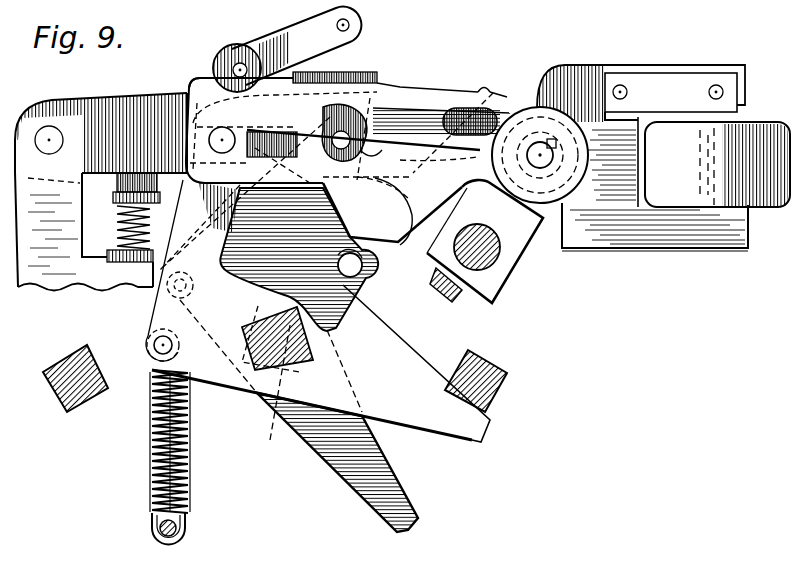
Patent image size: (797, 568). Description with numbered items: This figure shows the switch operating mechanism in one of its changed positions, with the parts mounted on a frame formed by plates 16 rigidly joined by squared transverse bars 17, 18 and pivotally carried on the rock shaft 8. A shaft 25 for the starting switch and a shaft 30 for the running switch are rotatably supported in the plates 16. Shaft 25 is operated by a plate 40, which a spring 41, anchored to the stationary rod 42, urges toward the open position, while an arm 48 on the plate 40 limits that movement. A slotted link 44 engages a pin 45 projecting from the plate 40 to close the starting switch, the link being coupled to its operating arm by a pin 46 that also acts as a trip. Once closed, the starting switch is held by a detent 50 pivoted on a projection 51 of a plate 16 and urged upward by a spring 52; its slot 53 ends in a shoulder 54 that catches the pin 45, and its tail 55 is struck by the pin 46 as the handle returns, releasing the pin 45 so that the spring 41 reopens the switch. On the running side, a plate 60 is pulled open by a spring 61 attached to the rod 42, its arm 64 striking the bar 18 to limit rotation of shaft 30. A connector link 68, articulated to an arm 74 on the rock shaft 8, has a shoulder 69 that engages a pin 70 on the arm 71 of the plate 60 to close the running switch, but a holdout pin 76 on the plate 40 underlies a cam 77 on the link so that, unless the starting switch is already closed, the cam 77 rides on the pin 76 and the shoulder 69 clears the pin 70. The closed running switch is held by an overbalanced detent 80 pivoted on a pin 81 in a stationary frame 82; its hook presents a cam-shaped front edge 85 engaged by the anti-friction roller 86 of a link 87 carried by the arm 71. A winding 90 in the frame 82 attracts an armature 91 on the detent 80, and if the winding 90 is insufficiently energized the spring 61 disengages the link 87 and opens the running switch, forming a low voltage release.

The rock shaft 8 is at (490, 263).
The plates 16 is at (90, 283).
The front transverse bar 17 is at (62, 368).
The rear transverse bar 18 is at (497, 365).
The starting switch shaft 25 is at (271, 376).
The running switch shaft 30 is at (320, 352).
The plate 40 is at (346, 290).
The spring 41 is at (190, 437).
The stationary rod 42 is at (186, 527).
The link 44 is at (415, 120).
The pin 45 is at (377, 143).
The pin 46 is at (547, 139).
The arm 48 is at (392, 492).
The detent 50 is at (124, 96).
The projection 51 is at (61, 229).
The spring 52 is at (118, 242).
The slot 53 is at (335, 172).
The shoulder 54 is at (299, 259).
The tail 55 is at (397, 204).
The plate 60 is at (212, 380).
The spring 61 is at (150, 417).
The arm 64 is at (480, 432).
The connector link 68 is at (197, 79).
The shoulder 69 is at (326, 105).
The pin 70 is at (222, 152).
The arm 71 is at (237, 57).
The arm 74 is at (510, 243).
The pin 76 is at (356, 264).
The cam 77 is at (385, 268).
The detent 80 is at (565, 92).
The pin 81 is at (588, 142).
The stationary frame 82 is at (616, 238).
The front edge 85 is at (488, 90).
The anti-friction roller 86 is at (335, 22).
The link 87 is at (305, 33).
The winding 90 is at (757, 130).
The armature 91 is at (727, 80).